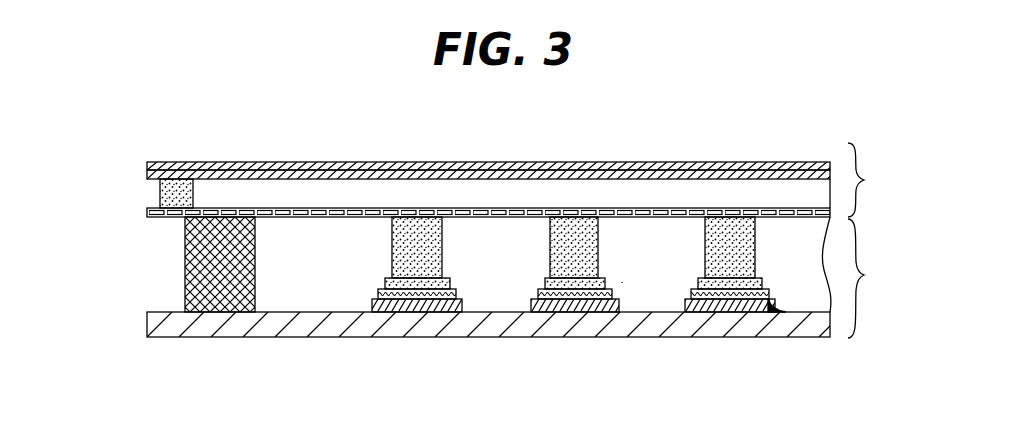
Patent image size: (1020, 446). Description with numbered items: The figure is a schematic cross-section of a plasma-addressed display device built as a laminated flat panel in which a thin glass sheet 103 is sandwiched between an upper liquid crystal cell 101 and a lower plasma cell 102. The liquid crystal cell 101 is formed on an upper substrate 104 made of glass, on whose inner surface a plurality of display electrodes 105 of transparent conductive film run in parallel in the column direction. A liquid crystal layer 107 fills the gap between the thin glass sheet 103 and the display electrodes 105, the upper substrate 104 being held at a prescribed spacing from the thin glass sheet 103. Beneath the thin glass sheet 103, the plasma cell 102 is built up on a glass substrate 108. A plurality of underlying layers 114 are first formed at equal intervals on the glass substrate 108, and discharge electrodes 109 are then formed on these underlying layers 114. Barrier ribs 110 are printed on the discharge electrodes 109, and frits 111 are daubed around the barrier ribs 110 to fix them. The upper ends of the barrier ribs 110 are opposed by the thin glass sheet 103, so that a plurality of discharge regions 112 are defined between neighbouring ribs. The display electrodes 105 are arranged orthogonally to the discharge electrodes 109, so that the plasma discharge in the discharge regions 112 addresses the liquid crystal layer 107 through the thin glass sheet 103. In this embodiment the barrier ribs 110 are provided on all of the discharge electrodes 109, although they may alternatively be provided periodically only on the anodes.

The liquid crystal cell 101 is at (880, 180).
The plasma cell 102 is at (871, 277).
The thin glass sheet 103 is at (147, 214).
The upper substrate 104 is at (147, 163).
The display electrodes 105 is at (150, 178).
The liquid crystal layer 107 is at (240, 190).
The glass substrate 108 is at (582, 323).
The discharge electrodes 109 is at (772, 305).
The barrier ribs 110 is at (705, 247).
The frits 111 is at (185, 277).
The discharge regions 112 is at (622, 282).
The underlying layers 114 is at (730, 303).